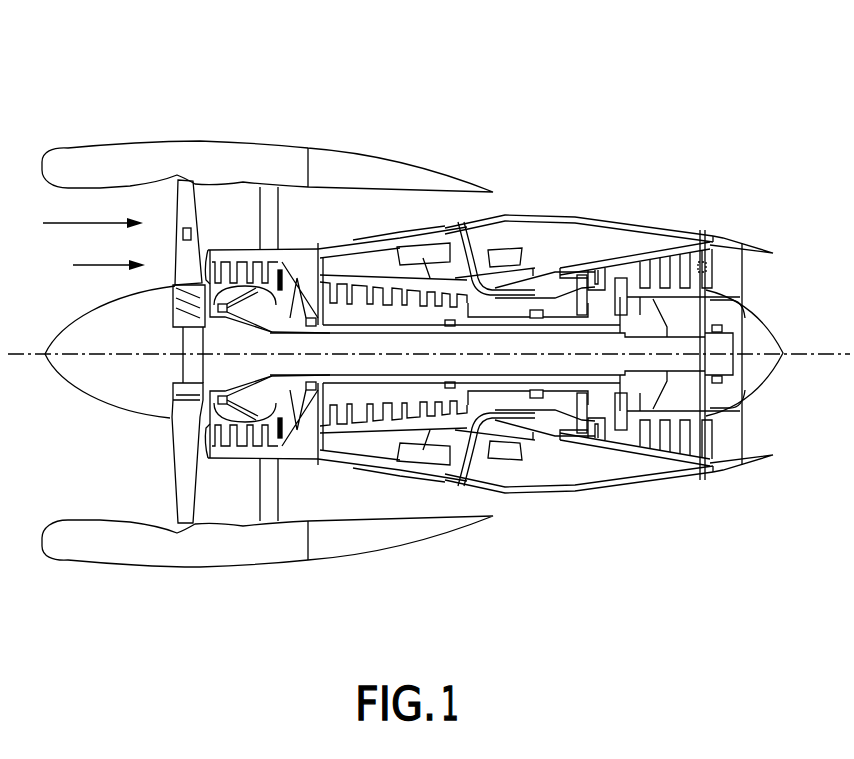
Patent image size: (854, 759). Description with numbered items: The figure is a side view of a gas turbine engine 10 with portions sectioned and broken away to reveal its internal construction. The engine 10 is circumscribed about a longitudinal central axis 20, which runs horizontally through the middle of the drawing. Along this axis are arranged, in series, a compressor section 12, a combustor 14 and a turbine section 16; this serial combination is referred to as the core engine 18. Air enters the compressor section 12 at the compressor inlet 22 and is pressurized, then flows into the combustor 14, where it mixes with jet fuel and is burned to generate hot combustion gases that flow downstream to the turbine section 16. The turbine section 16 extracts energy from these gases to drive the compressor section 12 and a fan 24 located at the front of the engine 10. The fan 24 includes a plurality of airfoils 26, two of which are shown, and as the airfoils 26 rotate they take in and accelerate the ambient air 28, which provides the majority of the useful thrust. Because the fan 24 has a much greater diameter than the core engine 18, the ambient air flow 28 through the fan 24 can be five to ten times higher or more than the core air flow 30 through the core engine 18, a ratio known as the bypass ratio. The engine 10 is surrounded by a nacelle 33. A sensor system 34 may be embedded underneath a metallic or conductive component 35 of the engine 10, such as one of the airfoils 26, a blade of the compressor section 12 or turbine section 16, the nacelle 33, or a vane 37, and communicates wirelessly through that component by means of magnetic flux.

The gas turbine engine 10 is at (496, 106).
The compressor section 12 is at (360, 290).
The combustor 14 is at (537, 290).
The turbine section 16 is at (603, 282).
The core engine 18 is at (592, 470).
The longitudinal central axis 20 is at (795, 353).
The compressor inlet 22 is at (207, 278).
The fan 24 is at (130, 432).
The airfoils 26 is at (183, 204).
The ambient air flow 28 is at (81, 221).
The core air flow 30 is at (96, 265).
The nacelle 33 is at (218, 157).
The sensor system 34 is at (182, 237).
The conductive component 35 is at (705, 292).
The vane 37 is at (645, 270).